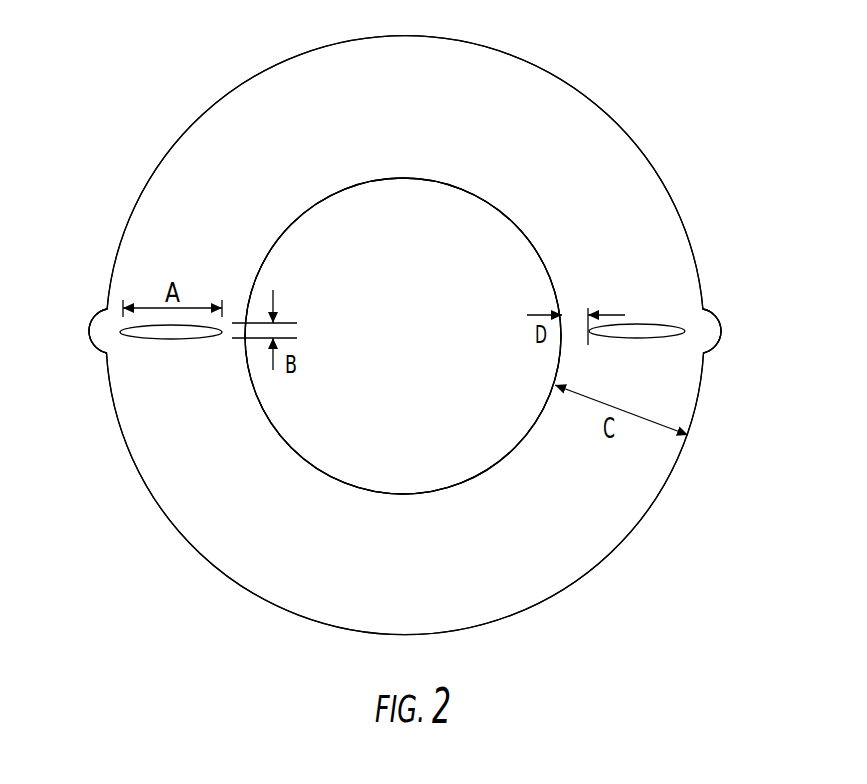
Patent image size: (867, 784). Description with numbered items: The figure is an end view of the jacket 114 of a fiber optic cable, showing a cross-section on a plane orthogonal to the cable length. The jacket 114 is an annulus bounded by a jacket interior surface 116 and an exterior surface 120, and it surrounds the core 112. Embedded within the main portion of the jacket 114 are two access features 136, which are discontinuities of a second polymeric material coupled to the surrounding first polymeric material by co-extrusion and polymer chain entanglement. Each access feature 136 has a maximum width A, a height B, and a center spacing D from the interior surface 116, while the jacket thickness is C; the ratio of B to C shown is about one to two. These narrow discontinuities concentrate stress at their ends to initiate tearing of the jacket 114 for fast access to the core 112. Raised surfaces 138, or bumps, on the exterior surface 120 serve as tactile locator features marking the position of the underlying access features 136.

The core 112 is at (424, 343).
The jacket 114 is at (463, 102).
The jacket interior surface 116 is at (490, 470).
The exterior surface 120 is at (632, 137).
The access features 136 is at (165, 335).
The raised surfaces 138 is at (82, 330).